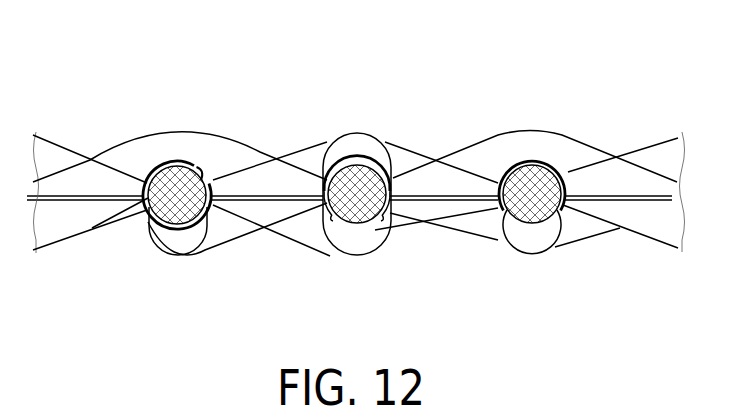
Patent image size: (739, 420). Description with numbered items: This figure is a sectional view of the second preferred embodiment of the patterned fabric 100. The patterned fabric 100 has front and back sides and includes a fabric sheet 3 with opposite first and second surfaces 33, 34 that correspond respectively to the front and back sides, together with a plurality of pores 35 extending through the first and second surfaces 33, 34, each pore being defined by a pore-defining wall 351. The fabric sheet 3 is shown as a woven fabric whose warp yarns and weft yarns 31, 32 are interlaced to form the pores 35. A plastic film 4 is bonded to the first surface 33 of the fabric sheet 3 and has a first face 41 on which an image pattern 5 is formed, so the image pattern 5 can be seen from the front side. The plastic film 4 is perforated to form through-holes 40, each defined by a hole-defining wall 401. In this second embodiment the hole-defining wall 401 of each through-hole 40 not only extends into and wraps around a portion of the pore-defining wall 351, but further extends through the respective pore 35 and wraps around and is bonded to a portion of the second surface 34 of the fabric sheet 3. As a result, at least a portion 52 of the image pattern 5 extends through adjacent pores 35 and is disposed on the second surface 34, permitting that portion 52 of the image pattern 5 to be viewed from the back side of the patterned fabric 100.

The patterned fabric 100 is at (565, 37).
The fabric sheet 3 is at (72, 240).
The warp yarns 31 is at (662, 212).
The weft yarns 32 is at (562, 240).
The first surface 33 is at (147, 182).
The second surface 34 is at (153, 247).
The pores 35 is at (233, 172).
The pore-defining wall 351 is at (187, 160).
The plastic film 4 is at (143, 163).
The through-holes 40 is at (268, 186).
The hole-defining wall 401 is at (140, 228).
The first face 41 is at (200, 172).
The image pattern 5 is at (337, 160).
The portion of the image pattern 52 is at (190, 250).